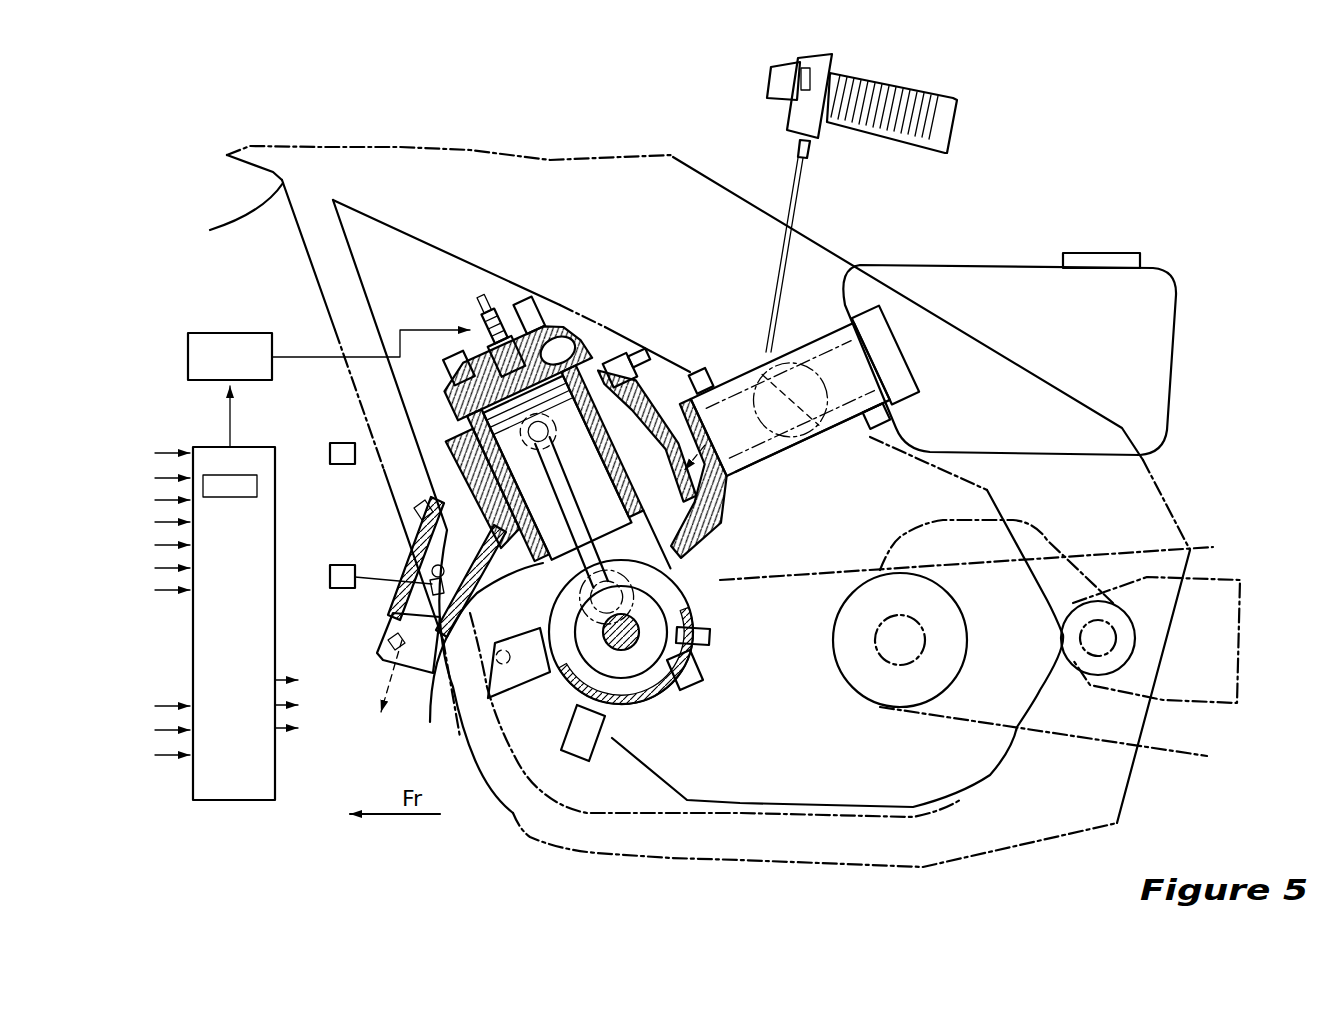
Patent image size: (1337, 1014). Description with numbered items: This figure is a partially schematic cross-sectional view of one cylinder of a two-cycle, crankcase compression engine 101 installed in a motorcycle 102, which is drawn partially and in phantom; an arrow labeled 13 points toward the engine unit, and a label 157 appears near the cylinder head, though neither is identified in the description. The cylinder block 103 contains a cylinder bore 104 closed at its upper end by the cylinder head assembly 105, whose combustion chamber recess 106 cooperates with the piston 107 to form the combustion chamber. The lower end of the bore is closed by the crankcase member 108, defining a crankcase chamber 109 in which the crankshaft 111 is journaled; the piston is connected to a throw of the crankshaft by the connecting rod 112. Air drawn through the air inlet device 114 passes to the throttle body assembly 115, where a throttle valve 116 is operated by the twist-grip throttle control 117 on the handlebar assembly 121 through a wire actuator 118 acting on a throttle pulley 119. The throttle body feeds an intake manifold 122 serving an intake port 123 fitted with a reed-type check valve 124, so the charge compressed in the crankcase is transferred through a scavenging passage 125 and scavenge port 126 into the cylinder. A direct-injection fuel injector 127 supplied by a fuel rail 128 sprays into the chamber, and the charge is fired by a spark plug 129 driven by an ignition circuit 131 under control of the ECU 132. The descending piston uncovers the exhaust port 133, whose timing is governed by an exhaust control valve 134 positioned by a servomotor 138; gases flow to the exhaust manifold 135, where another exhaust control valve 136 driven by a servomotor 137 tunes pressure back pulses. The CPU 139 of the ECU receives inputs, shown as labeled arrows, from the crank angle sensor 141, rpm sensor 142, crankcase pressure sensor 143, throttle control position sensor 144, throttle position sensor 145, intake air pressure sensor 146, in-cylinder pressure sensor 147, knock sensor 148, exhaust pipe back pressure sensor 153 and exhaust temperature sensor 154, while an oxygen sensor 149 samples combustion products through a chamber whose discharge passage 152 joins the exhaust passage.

The engine unit 13 is at (943, 212).
The engine 101 is at (668, 284).
The motorcycle 102 is at (210, 230).
The cylinder block 103 is at (598, 345).
The cylinder bore 104 is at (574, 506).
The cylinder head assembly 105 is at (555, 295).
The combustion chamber recess 106 is at (447, 387).
The piston 107 is at (668, 366).
The crankcase member 108 is at (692, 574).
The crankcase chamber 109 is at (558, 736).
The crankshaft 111 is at (640, 715).
The connecting rod 112 is at (412, 496).
The air inlet device 114 is at (1177, 318).
The throttle body assembly 115 is at (805, 300).
The throttle valve 116 is at (795, 441).
The twist-grip throttle control 117 is at (890, 85).
The wire actuator 118 is at (768, 292).
The throttle pulley 119 is at (850, 459).
The handlebar assembly 121 is at (778, 78).
The intake manifold 122 is at (726, 488).
The intake port 123 is at (720, 548).
The reed-type check valve 124 is at (685, 572).
The scavenging passage 125 is at (688, 371).
The scavenge port 126 is at (617, 460).
The fuel injector 127 is at (622, 312).
The fuel rail 128 is at (652, 343).
The spark plug 129 is at (530, 318).
The ignition circuit 131 is at (205, 333).
The ECU 132 is at (203, 445).
The exhaust port 133 is at (433, 488).
The exhaust control valve 134 is at (468, 516).
The exhaust manifold 135 is at (428, 553).
The exhaust control valve 136 is at (410, 597).
The servomotor 137 is at (330, 575).
The servomotor 138 is at (300, 447).
The CPU 139 is at (210, 497).
The crank angle sensor 141 is at (725, 700).
The rpm sensor 142 is at (735, 648).
The pressure sensor 143 is at (575, 750).
The throttle control position sensor 144 is at (122, 546).
The throttle position sensor 145 is at (815, 200).
The pressure sensor 146 is at (805, 510).
The in-cylinder pressure sensor 147 is at (515, 212).
The knock sensor 148 is at (427, 307).
The oxygen sensor 149 is at (800, 55).
The discharge passage 152 is at (517, 416).
The exhaust pipe back pressure sensor 153 is at (427, 500).
The exhaust temperature sensor 154 is at (362, 740).
The sensor 157 is at (440, 438).